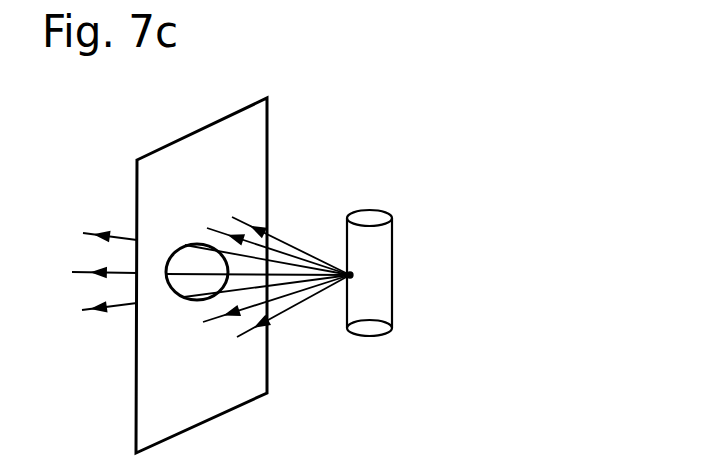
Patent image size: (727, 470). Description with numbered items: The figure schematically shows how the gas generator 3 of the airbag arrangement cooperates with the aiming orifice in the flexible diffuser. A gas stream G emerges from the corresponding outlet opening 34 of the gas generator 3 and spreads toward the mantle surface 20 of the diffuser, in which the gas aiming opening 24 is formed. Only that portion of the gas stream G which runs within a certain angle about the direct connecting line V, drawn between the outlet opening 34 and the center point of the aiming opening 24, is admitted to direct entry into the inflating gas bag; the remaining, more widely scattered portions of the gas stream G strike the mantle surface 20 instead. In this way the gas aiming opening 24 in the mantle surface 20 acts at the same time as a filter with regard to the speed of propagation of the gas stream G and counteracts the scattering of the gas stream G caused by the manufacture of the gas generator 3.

The mantle surface 20 is at (242, 167).
The gas aiming opening 24 is at (188, 262).
The outlet opening 34 is at (354, 273).
The gas generator 3 is at (383, 292).
The direct connecting line V is at (245, 272).
The gas stream G is at (282, 285).